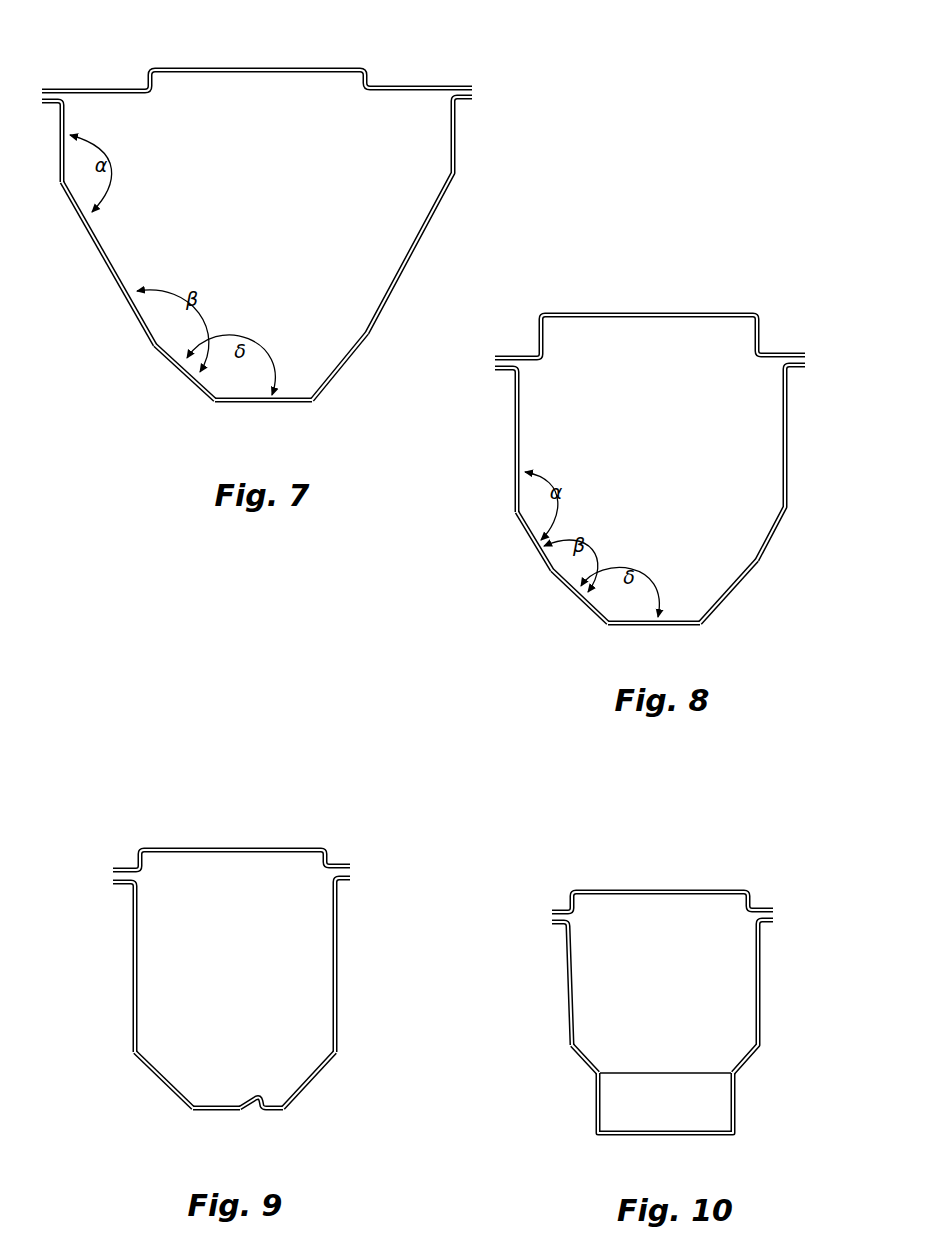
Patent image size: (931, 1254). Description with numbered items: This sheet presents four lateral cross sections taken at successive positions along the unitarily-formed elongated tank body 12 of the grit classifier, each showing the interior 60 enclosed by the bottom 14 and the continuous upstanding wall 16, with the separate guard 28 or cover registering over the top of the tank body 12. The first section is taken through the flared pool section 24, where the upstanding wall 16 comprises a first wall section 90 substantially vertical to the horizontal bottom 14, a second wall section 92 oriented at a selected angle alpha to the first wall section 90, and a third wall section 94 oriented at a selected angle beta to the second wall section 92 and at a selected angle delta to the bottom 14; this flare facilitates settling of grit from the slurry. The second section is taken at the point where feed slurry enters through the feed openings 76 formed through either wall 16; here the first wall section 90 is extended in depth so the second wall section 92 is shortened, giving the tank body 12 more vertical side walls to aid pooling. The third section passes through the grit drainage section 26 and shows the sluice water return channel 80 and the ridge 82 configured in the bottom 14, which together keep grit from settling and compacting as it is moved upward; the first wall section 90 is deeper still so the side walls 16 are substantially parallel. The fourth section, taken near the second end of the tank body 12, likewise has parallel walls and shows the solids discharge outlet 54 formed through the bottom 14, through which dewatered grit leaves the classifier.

In FIG. 7, the elongated tank body 12 is at (380, 316).
In FIG. 8, the elongated tank body 12 is at (761, 554).
In FIG. 9, the elongated tank body 12 is at (338, 1028).
In FIG. 7, the bottom 14 is at (289, 403).
In FIG. 8, the bottom 14 is at (682, 625).
In FIG. 9, the bottom 14 is at (232, 1111).
In FIG. 7, the upstanding wall 16 is at (442, 192).
In FIG. 8, the upstanding wall 16 is at (789, 408).
In FIG. 9, the upstanding wall 16 is at (338, 934).
In FIG. 10, the upstanding wall 16 is at (763, 968).
In FIG. 7, the pool section 24 is at (374, 259).
In FIG. 9, the grit drainage section 26 is at (309, 978).
In FIG. 7, the guard 28 is at (306, 69).
In FIG. 8, the guard 28 is at (668, 314).
In FIG. 9, the guard 28 is at (262, 848).
In FIG. 10, the guard 28 is at (656, 890).
In FIG. 10, the solids discharge outlet 54 is at (703, 1118).
In FIG. 7, the interior 60 is at (278, 223).
In FIG. 8, the interior 60 is at (668, 469).
In FIG. 9, the interior 60 is at (241, 966).
In FIG. 10, the interior 60 is at (675, 996).
In FIG. 8, the feed openings 76 is at (524, 443).
In FIG. 9, the sluice water return channel 80 is at (285, 1110).
In FIG. 9, the ridge 82 is at (253, 1096).
In FIG. 7, the first wall section 90 is at (56, 106).
In FIG. 8, the first wall section 90 is at (511, 380).
In FIG. 9, the first wall section 90 is at (118, 890).
In FIG. 10, the first wall section 90 is at (562, 926).
In FIG. 7, the second wall section 92 is at (60, 187).
In FIG. 8, the second wall section 92 is at (557, 597).
In FIG. 7, the third wall section 94 is at (214, 408).
In FIG. 8, the third wall section 94 is at (607, 632).
In FIG. 9, the third wall section 94 is at (134, 1056).
In FIG. 10, the third wall section 94 is at (566, 1048).